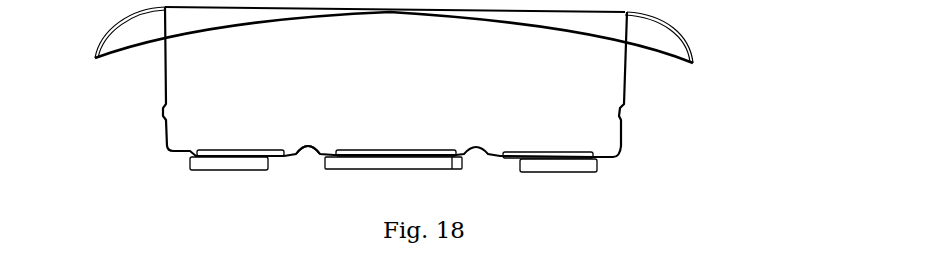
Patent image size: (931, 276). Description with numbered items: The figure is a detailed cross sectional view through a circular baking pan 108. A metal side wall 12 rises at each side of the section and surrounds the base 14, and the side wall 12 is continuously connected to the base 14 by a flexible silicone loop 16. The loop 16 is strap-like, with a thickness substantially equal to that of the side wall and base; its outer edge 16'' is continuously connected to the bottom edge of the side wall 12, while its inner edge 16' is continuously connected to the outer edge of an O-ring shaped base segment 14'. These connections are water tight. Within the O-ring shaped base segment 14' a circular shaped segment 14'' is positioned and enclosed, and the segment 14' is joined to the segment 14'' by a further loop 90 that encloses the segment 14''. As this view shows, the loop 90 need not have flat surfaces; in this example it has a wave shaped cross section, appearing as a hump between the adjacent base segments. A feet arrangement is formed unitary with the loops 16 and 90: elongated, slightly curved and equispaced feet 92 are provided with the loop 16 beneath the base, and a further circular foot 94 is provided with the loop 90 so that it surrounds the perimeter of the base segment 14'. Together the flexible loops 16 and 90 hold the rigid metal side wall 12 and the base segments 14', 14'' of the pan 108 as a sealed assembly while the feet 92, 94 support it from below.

The side wall 12 is at (626, 75).
The base 14 is at (694, 167).
The O-ring shaped base segment 14' is at (396, 140).
The circular shaped base segment 14'' is at (240, 140).
The flexible silicone loop 16 is at (423, 161).
The inner edge of the loop 16' is at (548, 138).
The outer edge of the loop 16'' is at (639, 84).
The further loop 90 is at (309, 148).
The feet 92 is at (216, 171).
The circular foot 94 is at (458, 165).
The circular baking pan 108 is at (681, 136).